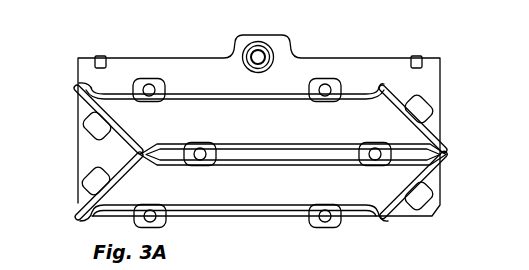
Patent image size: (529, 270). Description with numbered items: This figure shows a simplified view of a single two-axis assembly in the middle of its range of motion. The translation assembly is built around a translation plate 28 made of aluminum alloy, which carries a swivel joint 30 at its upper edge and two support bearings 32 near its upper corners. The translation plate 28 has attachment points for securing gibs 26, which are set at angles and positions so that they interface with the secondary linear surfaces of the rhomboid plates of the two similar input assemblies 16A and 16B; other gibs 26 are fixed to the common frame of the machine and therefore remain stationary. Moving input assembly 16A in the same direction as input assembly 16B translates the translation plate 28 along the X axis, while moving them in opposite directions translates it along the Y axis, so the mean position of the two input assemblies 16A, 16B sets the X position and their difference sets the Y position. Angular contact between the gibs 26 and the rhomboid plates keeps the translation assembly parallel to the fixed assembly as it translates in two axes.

The translation plate 28 is at (172, 57).
The support bearing 32 is at (98, 55).
The swivel joint 30 is at (265, 50).
The input assembly 16A is at (76, 88).
The input assembly 16B is at (76, 214).
The gib 26 is at (78, 140).